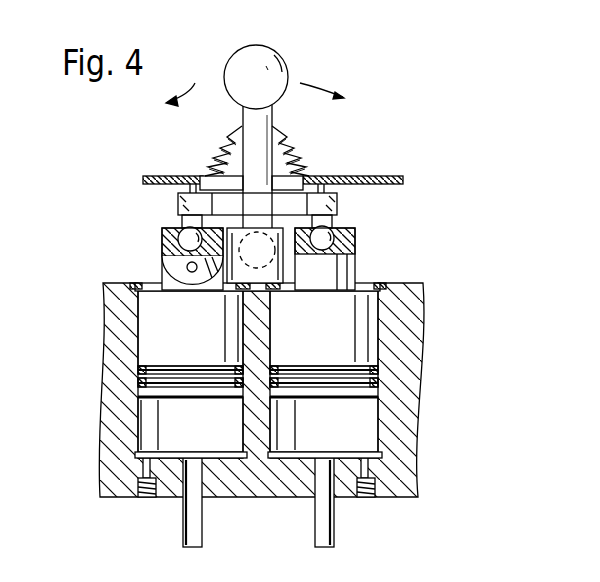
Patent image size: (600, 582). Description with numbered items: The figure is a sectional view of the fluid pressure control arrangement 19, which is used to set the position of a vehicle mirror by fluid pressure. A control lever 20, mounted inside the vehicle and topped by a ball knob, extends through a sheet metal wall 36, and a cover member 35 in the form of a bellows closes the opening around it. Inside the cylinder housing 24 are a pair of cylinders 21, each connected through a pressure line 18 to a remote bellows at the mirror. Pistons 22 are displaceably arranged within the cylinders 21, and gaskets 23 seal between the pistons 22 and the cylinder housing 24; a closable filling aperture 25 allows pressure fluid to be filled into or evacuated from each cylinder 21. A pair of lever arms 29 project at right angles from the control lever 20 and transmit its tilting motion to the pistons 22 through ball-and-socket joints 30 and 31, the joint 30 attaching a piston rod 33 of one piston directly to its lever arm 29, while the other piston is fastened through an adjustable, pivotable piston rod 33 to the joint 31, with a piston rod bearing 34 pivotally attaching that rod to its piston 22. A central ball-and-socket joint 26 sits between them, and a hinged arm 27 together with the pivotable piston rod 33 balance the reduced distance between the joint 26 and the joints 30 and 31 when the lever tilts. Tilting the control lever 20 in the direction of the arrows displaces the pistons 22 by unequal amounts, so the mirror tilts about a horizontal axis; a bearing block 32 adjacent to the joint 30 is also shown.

The pressure lines 18 is at (186, 534).
The fluid pressure control arrangement 19 is at (425, 222).
The control lever 20 is at (279, 64).
The cylinders 21 is at (143, 430).
The pistons 22 is at (143, 322).
The gaskets 23 is at (143, 383).
The cylinder housing 24 is at (404, 478).
The closable filling aperture 25 is at (143, 498).
The ball-and-socket joint 26 is at (286, 269).
The hinged arm 27 is at (273, 286).
The lever arms 29 is at (190, 193).
The ball-and-socket joint 30 is at (353, 232).
The ball-and-socket joint 31 is at (182, 232).
The right bearing block 32 is at (352, 272).
The piston rod 33 is at (162, 248).
The piston rod bearing 34 is at (192, 273).
The cover member 35 is at (296, 150).
The sheet metal wall 36 is at (390, 175).